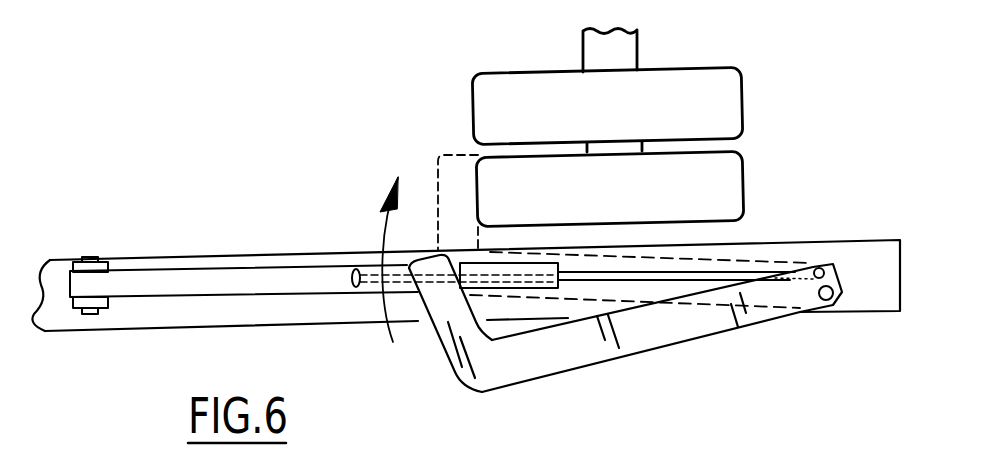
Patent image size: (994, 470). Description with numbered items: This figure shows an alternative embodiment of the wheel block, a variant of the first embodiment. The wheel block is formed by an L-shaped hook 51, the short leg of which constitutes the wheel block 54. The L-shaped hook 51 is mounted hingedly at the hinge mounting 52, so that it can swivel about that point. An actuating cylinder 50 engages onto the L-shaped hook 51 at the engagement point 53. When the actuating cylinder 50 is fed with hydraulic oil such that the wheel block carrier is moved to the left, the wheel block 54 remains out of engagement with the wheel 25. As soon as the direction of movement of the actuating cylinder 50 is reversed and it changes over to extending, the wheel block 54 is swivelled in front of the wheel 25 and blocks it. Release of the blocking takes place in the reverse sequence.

The wheel 25 is at (733, 190).
The actuating cylinder 50 is at (237, 278).
The L-shaped hook 51 is at (670, 333).
The hinge mounting 52 is at (824, 301).
The engagement point 53 is at (818, 267).
The wheel block 54 is at (440, 308).